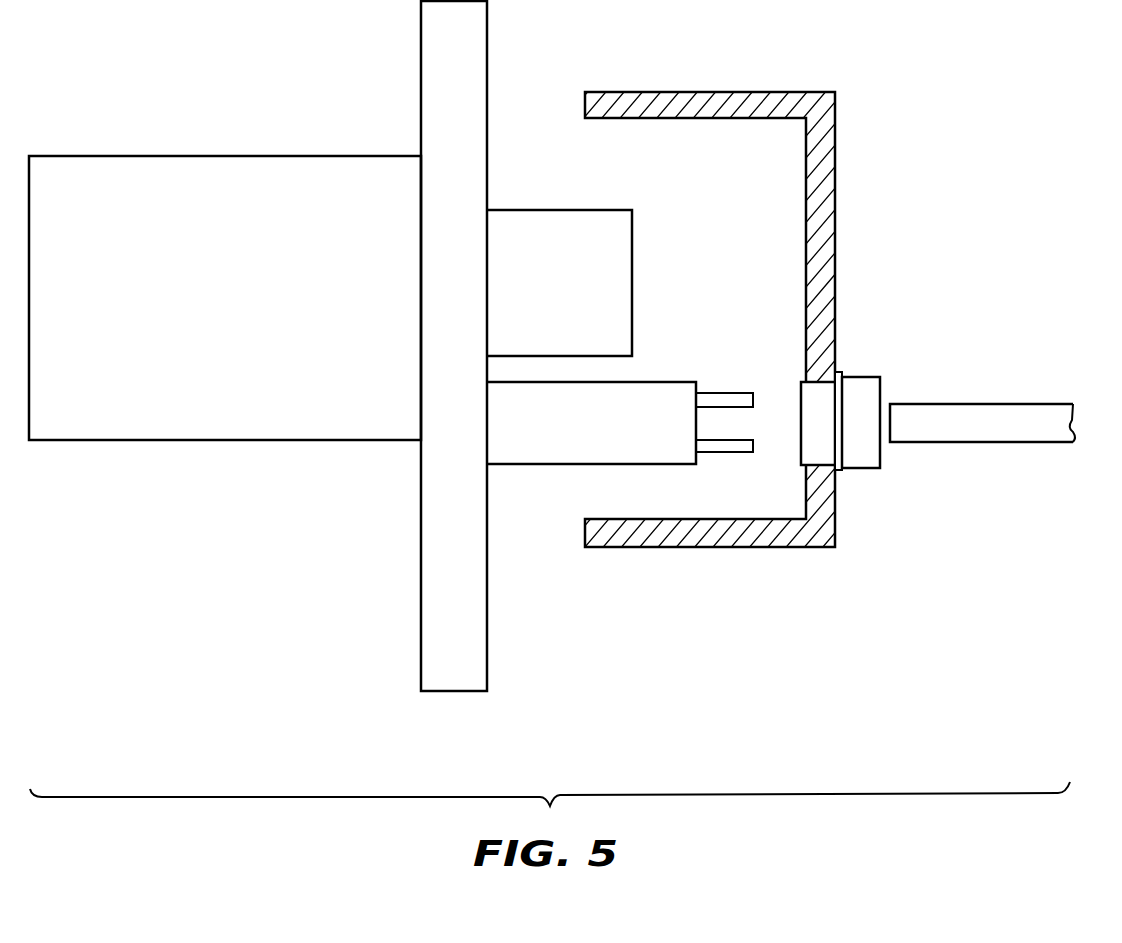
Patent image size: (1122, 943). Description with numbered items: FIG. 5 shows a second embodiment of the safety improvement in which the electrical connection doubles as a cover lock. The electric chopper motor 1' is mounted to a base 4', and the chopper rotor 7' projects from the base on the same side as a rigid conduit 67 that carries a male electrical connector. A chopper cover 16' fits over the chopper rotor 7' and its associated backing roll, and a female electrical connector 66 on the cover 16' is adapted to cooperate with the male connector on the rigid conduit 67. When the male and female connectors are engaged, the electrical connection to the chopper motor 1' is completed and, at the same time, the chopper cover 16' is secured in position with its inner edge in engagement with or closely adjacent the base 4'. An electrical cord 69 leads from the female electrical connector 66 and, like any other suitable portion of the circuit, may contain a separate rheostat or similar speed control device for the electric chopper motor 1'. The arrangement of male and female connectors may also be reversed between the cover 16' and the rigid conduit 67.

The electric chopper motor 1' is at (225, 330).
The base 4' is at (484, 346).
The chopper rotor 7' is at (590, 283).
The rigid conduit 67 is at (555, 457).
The chopper cover 16' is at (661, 354).
The female electrical connector 66 is at (868, 468).
The electrical cord 69 is at (998, 437).